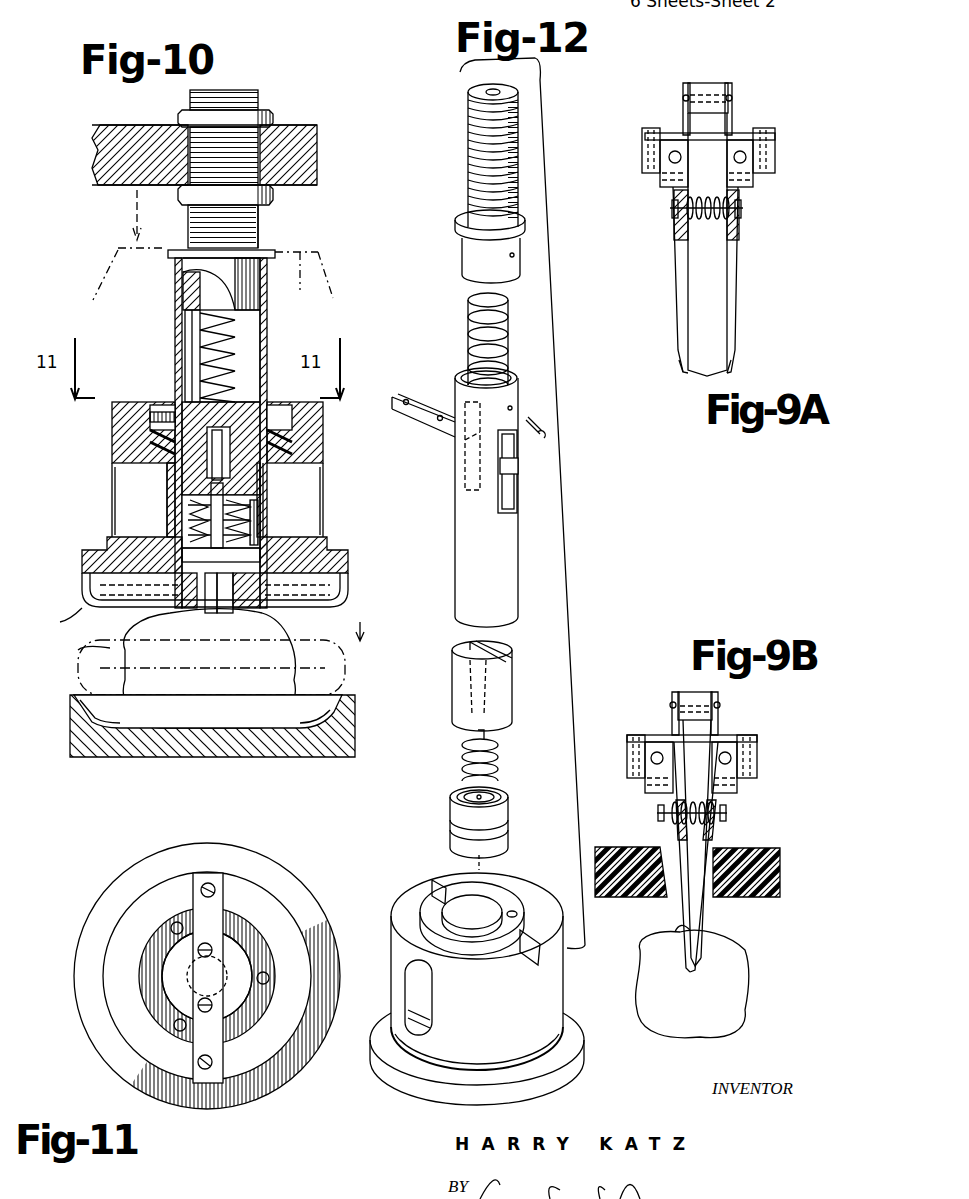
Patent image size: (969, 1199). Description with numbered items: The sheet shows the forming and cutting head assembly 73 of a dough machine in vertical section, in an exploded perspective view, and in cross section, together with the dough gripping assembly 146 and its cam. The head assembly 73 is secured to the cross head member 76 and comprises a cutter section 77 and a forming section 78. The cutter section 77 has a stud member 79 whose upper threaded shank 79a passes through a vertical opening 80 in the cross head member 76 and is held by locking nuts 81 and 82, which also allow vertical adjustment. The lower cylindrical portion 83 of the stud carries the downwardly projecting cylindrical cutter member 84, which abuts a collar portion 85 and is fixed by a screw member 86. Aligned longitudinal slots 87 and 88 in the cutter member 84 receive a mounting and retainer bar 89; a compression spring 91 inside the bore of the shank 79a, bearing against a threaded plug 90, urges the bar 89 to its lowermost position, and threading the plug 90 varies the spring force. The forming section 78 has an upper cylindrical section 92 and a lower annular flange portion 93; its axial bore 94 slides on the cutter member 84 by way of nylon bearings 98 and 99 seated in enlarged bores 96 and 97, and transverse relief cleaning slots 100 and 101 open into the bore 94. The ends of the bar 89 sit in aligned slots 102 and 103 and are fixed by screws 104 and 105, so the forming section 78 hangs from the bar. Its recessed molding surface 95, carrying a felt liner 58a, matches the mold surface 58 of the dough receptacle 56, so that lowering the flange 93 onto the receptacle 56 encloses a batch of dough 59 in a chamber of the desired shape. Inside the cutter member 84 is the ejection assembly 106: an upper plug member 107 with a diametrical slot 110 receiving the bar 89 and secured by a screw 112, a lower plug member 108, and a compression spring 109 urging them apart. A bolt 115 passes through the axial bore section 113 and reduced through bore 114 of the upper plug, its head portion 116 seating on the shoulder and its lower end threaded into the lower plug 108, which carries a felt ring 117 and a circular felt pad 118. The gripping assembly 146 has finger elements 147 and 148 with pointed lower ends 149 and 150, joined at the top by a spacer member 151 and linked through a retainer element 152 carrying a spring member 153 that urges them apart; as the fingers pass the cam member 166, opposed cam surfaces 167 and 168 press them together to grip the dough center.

In FIG. 10, the dough receptacle 56 is at (355, 745).
In FIG. 10, the mold surface 58 is at (332, 706).
In FIG. 10, the felt liner 58a is at (56, 614).
In FIG. 10, the batch of dough 59 is at (110, 650).
In FIG. 10, the head assembly 73 is at (271, 243).
In FIG. 10, the cross head member 76 is at (300, 130).
In FIG. 10, the cutter section 77 is at (279, 339).
In FIG. 10, the forming section 78 is at (334, 460).
In FIG. 11, the forming section 78 is at (108, 870).
In FIG. 12, the forming section 78 is at (386, 1086).
In FIG. 10, the stud member 79 is at (270, 216).
In FIG. 12, the stud member 79 is at (458, 144).
In FIG. 12, the upper threaded shank 79a is at (470, 172).
In FIG. 10, the vertical opening 80 is at (196, 148).
In FIG. 10, the locking nut 81 is at (252, 112).
In FIG. 10, the locking nut 82 is at (276, 195).
In FIG. 10, the cylindrical portion 83 is at (262, 300).
In FIG. 12, the cylindrical portion 83 is at (470, 262).
In FIG. 10, the cylindrical cutter member 84 is at (183, 345).
In FIG. 11, the cylindrical cutter member 84 is at (168, 988).
In FIG. 12, the cylindrical cutter member 84 is at (500, 578).
In FIG. 10, the collar portion 85 is at (280, 256).
In FIG. 12, the collar portion 85 is at (458, 226).
In FIG. 10, the screw member 86 is at (268, 286).
In FIG. 12, the screw member 86 is at (538, 420).
In FIG. 12, the longitudinally extending slot 87 is at (462, 468).
In FIG. 12, the longitudinally extending slot 88 is at (514, 495).
In FIG. 10, the mounting and retainer bar 89 is at (266, 396).
In FIG. 11, the mounting and retainer bar 89 is at (186, 1035).
In FIG. 12, the mounting and retainer bar 89 is at (410, 398).
In FIG. 12, the threaded plug 90 is at (486, 92).
In FIG. 12, the compression spring 91 is at (470, 322).
In FIG. 11, the upper cylindrical section 92 is at (112, 938).
In FIG. 12, the upper cylindrical section 92 is at (550, 978).
In FIG. 10, the lower annular flange portion 93 is at (342, 568).
In FIG. 11, the lower annular flange portion 93 is at (85, 1015).
In FIG. 12, the lower annular flange portion 93 is at (575, 1062).
In FIG. 10, the axial bore 94 is at (256, 486).
In FIG. 12, the axial bore 94 is at (500, 912).
In FIG. 10, the molding surface 95 is at (348, 590).
In FIG. 10, the enlarged bore 96 is at (172, 402).
In FIG. 11, the enlarged bore 96 is at (250, 880).
In FIG. 10, the enlarged bore 97 is at (178, 585).
In FIG. 10, the nylon bearing 98 is at (150, 432).
In FIG. 11, the nylon bearing 98 is at (150, 960).
In FIG. 12, the nylon bearing 98 is at (435, 912).
In FIG. 10, the nylon bearing 99 is at (165, 537).
In FIG. 10, the relief cleaning slot 100 is at (118, 505).
In FIG. 12, the relief cleaning slot 100 is at (420, 1000).
In FIG. 10, the relief cleaning slot 101 is at (320, 515).
In FIG. 12, the aligned slot 102 is at (425, 882).
In FIG. 12, the aligned slot 103 is at (526, 935).
In FIG. 11, the screw 104 is at (216, 890).
In FIG. 11, the screw 105 is at (216, 1062).
In FIG. 10, the retainer or ejection assembly 106 is at (262, 502).
In FIG. 11, the retainer or ejection assembly 106 is at (235, 975).
In FIG. 12, the upper plug member 107 is at (505, 690).
In FIG. 12, the lower plug member 108 is at (505, 820).
In FIG. 12, the compression spring 109 is at (500, 762).
In FIG. 12, the diametrically disposed slot 110 is at (496, 645).
In FIG. 11, the screw 112 is at (232, 1000).
In FIG. 10, the axial bore section 113 is at (212, 470).
In FIG. 10, the through bore 114 is at (258, 520).
In FIG. 10, the bolt 115 is at (221, 532).
In FIG. 10, the head portion 116 is at (211, 492).
In FIG. 10, the felt ring 117 is at (186, 610).
In FIG. 12, the felt ring 117 is at (455, 838).
In FIG. 10, the circular felt pad 118 is at (224, 610).
In FIG. 12, the circular felt pad 118 is at (492, 852).
In FIG. 9A, the gripping assembly 146 is at (735, 98).
In FIG. 9A, the finger element 147 is at (676, 268).
In FIG. 9B, the finger element 147 is at (728, 726).
In FIG. 9A, the finger element 148 is at (735, 272).
In FIG. 9B, the finger element 148 is at (712, 832).
In FIG. 9A, the pointed lower end 149 is at (676, 366).
In FIG. 9A, the pointed lower end 150 is at (735, 362).
In FIG. 9A, the spacer member 151 is at (712, 85).
In FIG. 9B, the spacer member 151 is at (690, 692).
In FIG. 9A, the retainer element 152 is at (720, 224).
In FIG. 9B, the retainer element 152 is at (692, 828).
In FIG. 9A, the spring member 153 is at (706, 197).
In FIG. 9B, the spring member 153 is at (695, 802).
In FIG. 9B, the cam member 166 is at (613, 898).
In FIG. 9B, the cam surface 167 is at (748, 848).
In FIG. 9B, the cam surface 168 is at (678, 892).